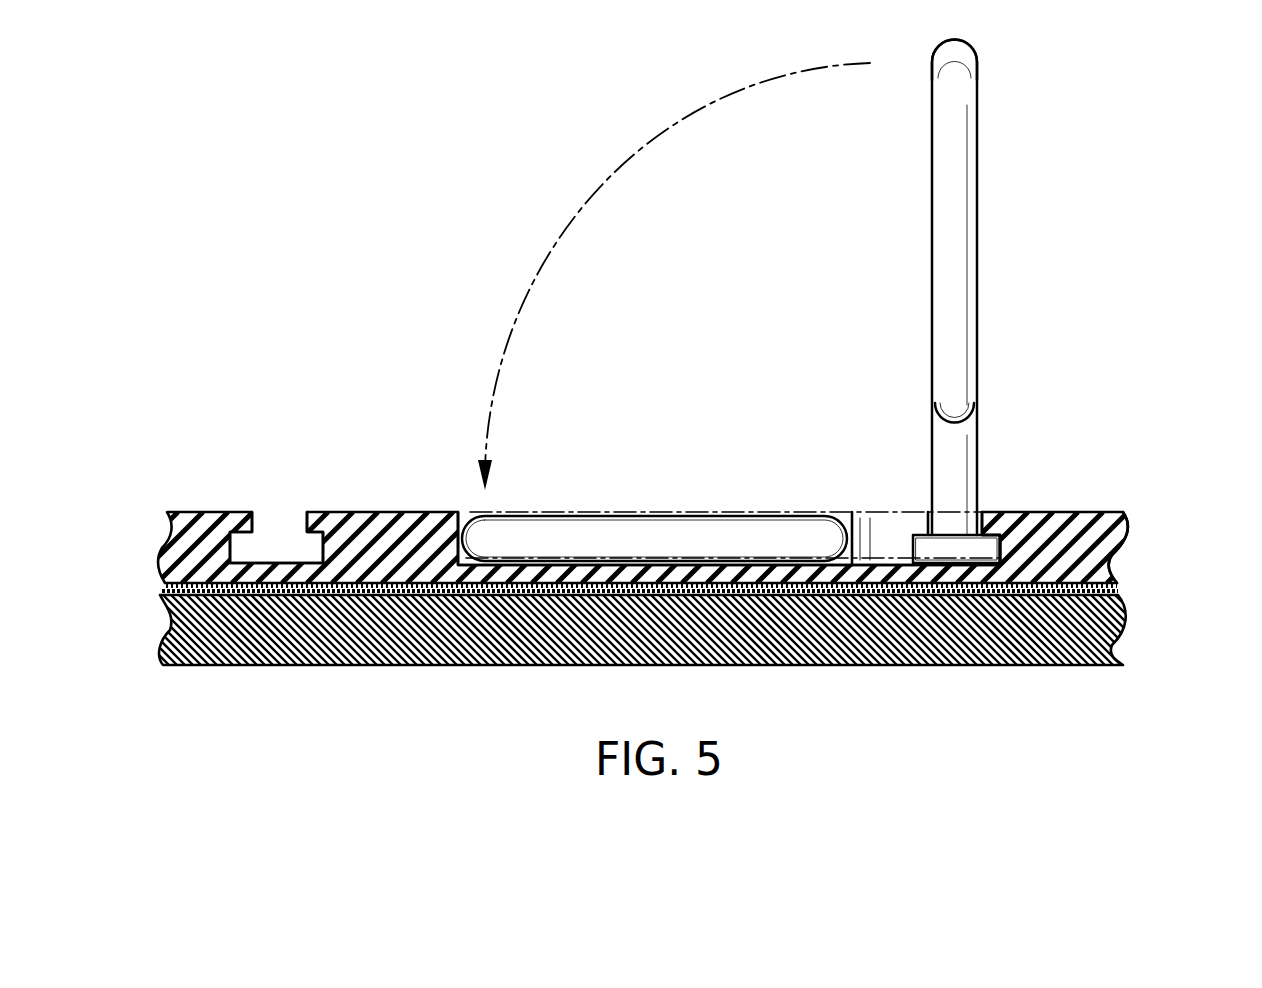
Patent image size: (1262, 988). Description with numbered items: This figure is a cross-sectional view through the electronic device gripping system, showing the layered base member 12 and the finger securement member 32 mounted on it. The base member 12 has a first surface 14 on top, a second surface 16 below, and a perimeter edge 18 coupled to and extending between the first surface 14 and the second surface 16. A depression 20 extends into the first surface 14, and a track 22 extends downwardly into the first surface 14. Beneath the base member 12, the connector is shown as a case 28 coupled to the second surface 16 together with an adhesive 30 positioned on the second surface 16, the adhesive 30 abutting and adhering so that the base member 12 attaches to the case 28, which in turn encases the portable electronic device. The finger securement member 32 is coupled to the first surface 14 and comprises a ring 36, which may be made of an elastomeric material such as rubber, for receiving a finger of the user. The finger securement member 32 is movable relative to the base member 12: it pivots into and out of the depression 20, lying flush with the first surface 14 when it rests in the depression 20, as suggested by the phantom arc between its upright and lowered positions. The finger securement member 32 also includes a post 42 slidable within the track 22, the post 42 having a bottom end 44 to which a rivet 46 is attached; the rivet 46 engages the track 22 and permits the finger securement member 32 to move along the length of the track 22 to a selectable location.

The base member 12 is at (1124, 500).
The first surface 14 is at (188, 510).
The second surface 16 is at (200, 580).
The perimeter edge 18 is at (187, 552).
The depression 20 is at (512, 567).
The track 22 is at (260, 567).
The case 28 is at (1120, 625).
The adhesive 30 is at (1125, 590).
The finger securement member 32 is at (990, 225).
The ring 36 is at (978, 126).
The post 42 is at (979, 428).
The bottom end 44 is at (956, 535).
The rivet 46 is at (1000, 560).